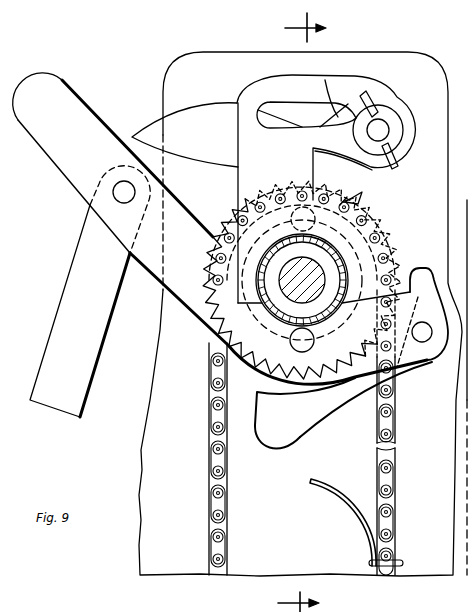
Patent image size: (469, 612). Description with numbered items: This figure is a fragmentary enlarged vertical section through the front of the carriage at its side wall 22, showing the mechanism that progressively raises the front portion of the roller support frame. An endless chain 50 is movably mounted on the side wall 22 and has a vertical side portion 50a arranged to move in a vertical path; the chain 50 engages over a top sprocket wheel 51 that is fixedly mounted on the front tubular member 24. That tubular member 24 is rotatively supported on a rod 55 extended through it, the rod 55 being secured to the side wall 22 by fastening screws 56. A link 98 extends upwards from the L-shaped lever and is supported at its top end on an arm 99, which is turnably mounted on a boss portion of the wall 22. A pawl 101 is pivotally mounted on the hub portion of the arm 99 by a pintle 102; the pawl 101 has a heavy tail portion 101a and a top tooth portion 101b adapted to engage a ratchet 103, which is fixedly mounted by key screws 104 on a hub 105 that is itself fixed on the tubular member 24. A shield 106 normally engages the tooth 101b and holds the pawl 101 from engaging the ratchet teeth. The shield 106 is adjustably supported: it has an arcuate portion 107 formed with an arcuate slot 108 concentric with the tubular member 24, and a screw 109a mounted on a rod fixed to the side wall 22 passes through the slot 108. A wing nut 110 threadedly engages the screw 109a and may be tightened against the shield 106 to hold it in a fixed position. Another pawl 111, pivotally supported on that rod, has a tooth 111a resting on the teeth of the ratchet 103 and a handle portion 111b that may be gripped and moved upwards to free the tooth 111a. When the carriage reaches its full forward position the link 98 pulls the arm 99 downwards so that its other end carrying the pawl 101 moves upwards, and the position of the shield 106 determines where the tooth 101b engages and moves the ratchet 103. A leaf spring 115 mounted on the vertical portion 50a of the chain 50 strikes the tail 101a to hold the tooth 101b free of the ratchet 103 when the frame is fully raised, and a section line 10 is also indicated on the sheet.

The section line 10 is at (302, 310).
The side wall 22 is at (153, 555).
The front tubular member 24 is at (278, 242).
The chain 50 is at (391, 502).
The vertical side portion 50a is at (391, 459).
The top sprocket wheel 51 is at (257, 377).
The rod 55 is at (290, 303).
The fastening screw 56 is at (460, 387).
The link 98 is at (85, 253).
The arm 99 is at (58, 96).
The pawl 101 is at (310, 425).
The tail portion 101a is at (280, 444).
The top tooth portion 101b is at (418, 266).
The pintle 102 is at (422, 342).
The ratchet 103 is at (347, 197).
The key screw 104 is at (290, 341).
The hub 105 is at (335, 316).
The shield 106 is at (391, 228).
The arcuate portion 107 is at (347, 88).
The arcuate slot 108 is at (282, 104).
The screw 109a is at (382, 126).
The wing nut 110 is at (372, 107).
The pawl 111 is at (326, 80).
The tooth 111a is at (240, 183).
The handle portion 111b is at (152, 128).
The leaf spring 115 is at (350, 497).